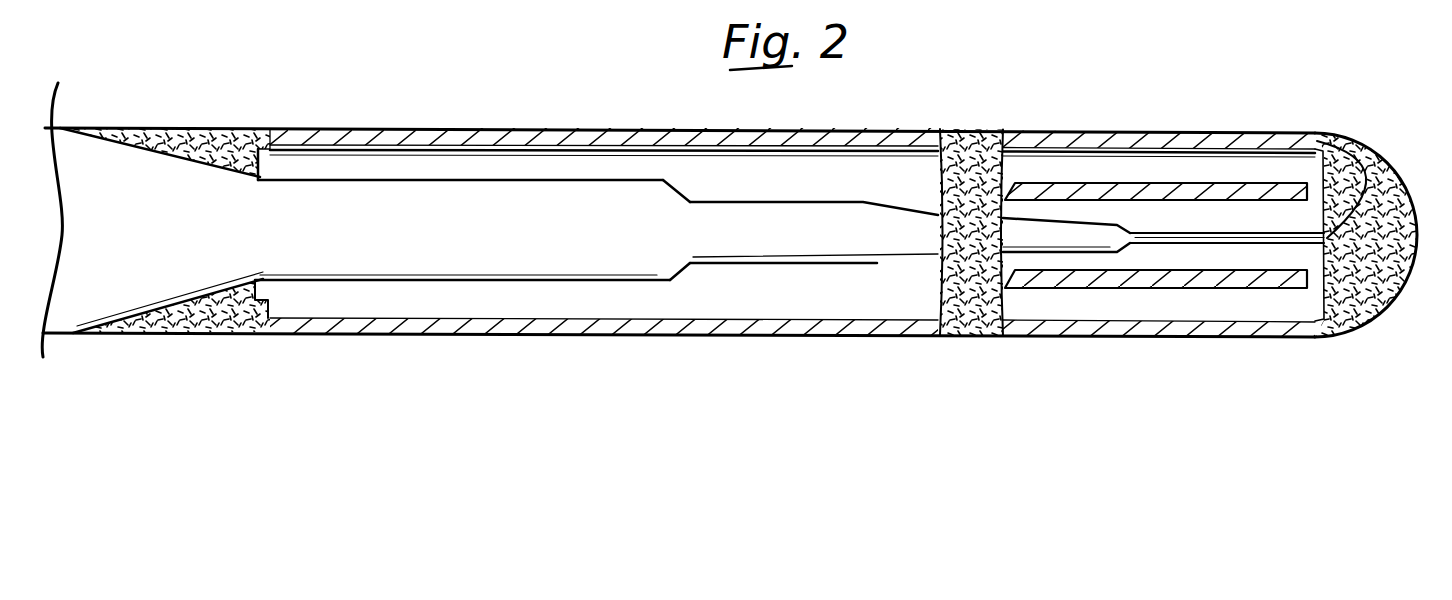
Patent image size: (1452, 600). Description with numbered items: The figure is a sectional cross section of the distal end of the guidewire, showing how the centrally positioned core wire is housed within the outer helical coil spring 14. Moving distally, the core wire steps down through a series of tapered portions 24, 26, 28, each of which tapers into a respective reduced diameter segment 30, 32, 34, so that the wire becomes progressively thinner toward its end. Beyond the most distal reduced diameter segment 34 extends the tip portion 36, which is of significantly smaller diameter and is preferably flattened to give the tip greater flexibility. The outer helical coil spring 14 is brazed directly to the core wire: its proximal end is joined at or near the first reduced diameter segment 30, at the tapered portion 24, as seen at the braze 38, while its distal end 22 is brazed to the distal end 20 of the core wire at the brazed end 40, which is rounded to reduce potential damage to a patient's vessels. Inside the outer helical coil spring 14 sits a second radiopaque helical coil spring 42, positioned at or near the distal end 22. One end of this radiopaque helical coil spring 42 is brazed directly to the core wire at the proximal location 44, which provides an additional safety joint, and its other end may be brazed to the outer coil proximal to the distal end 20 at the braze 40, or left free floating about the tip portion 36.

The outer helical coil spring 14 is at (494, 130).
The distal end of core wire 20 is at (1373, 180).
The distal end of outer helical coil spring 22 is at (1322, 140).
The tapered portion 24 is at (143, 173).
The tapered portion 26 is at (690, 277).
The tapered portion 28 is at (875, 263).
The reduced diameter segment 30 is at (440, 240).
The reduced diameter segment 32 is at (797, 232).
The reduced diameter segment 34 is at (1067, 235).
The tip portion 36 is at (1223, 238).
The braze 38 is at (232, 130).
The brazed end 40 is at (1358, 142).
The second radiopaque helical coil spring 42 is at (1063, 180).
The proximal location 44 is at (966, 130).